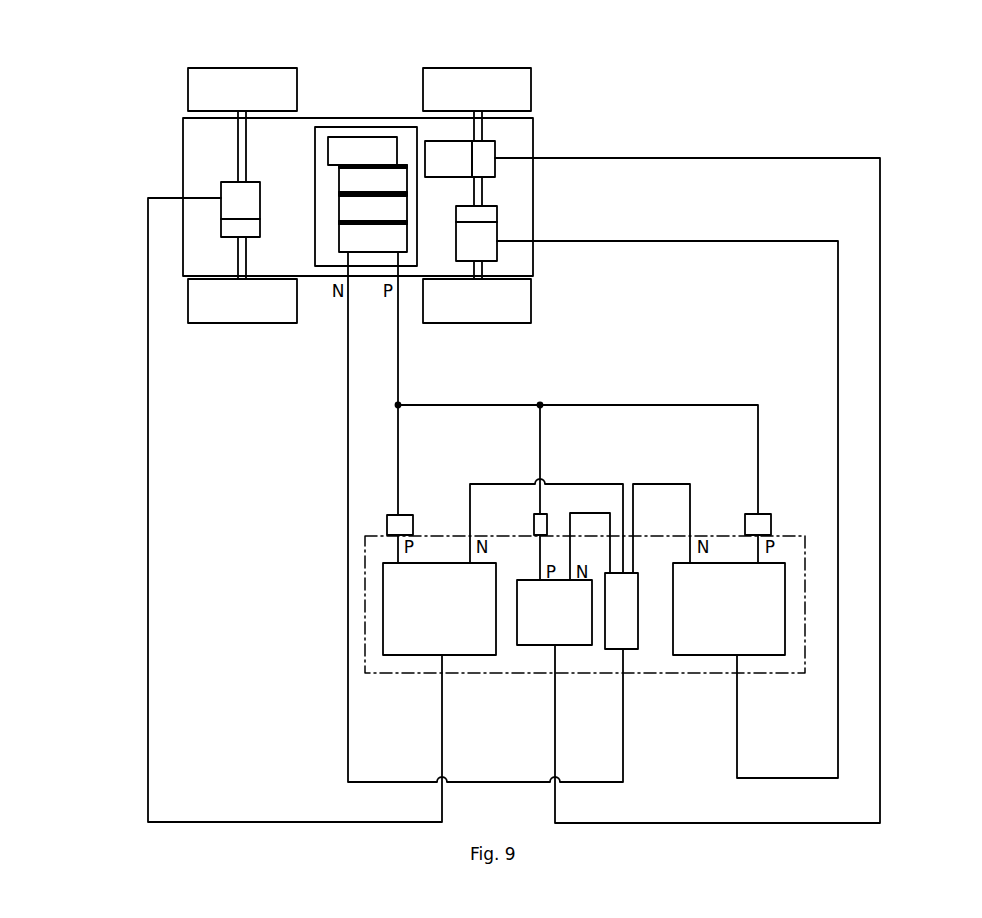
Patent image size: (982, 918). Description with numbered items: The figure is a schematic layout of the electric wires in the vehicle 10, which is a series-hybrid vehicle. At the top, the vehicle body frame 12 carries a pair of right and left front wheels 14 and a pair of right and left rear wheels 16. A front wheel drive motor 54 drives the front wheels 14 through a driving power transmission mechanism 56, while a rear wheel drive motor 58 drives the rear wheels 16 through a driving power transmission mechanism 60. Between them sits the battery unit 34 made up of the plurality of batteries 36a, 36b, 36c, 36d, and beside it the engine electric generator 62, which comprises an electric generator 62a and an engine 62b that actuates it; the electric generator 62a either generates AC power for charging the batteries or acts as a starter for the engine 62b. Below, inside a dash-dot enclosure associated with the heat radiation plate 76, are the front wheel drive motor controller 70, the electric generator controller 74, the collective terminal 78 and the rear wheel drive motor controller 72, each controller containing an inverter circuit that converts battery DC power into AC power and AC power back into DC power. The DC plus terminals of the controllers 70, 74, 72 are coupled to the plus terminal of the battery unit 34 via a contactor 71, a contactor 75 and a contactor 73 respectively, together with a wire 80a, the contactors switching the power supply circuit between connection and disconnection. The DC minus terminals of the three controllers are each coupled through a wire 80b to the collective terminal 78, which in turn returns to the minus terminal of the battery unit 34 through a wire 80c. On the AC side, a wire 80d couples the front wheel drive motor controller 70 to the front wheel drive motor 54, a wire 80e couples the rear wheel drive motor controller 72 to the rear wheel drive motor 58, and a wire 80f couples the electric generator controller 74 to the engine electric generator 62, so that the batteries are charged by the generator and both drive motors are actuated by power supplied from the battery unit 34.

The vehicle 10 is at (141, 66).
The vehicle body frame 12 is at (180, 125).
The front wheels 14 is at (246, 78).
The rear wheels 16 is at (484, 79).
The battery unit 34 is at (382, 138).
The battery 36a is at (348, 238).
The battery 36b is at (346, 212).
The battery 36c is at (349, 180).
The battery 36d is at (354, 152).
The front wheel drive motor 54 is at (232, 190).
The driving power transmission mechanism 56 is at (235, 228).
The rear wheel drive motor 58 is at (482, 245).
The driving power transmission mechanism 60 is at (482, 214).
The engine electric generator 62 is at (512, 128).
The electric generator 62a is at (480, 156).
The engine 62b is at (412, 150).
The front wheel drive motor controller 70 is at (405, 645).
The contactor 71 is at (387, 523).
The rear wheel drive motor controller 72 is at (706, 645).
The contactor 73 is at (771, 524).
The electric generator controller 74 is at (535, 640).
The contactor 75 is at (534, 524).
The heat radiation plate 76 is at (716, 535).
The collective terminal 78 is at (630, 628).
The wire 80a is at (399, 498).
The wire 80b is at (498, 485).
The wire 80c is at (348, 450).
The wire 80d is at (226, 822).
The wire 80e is at (838, 300).
The wire 80f is at (880, 350).